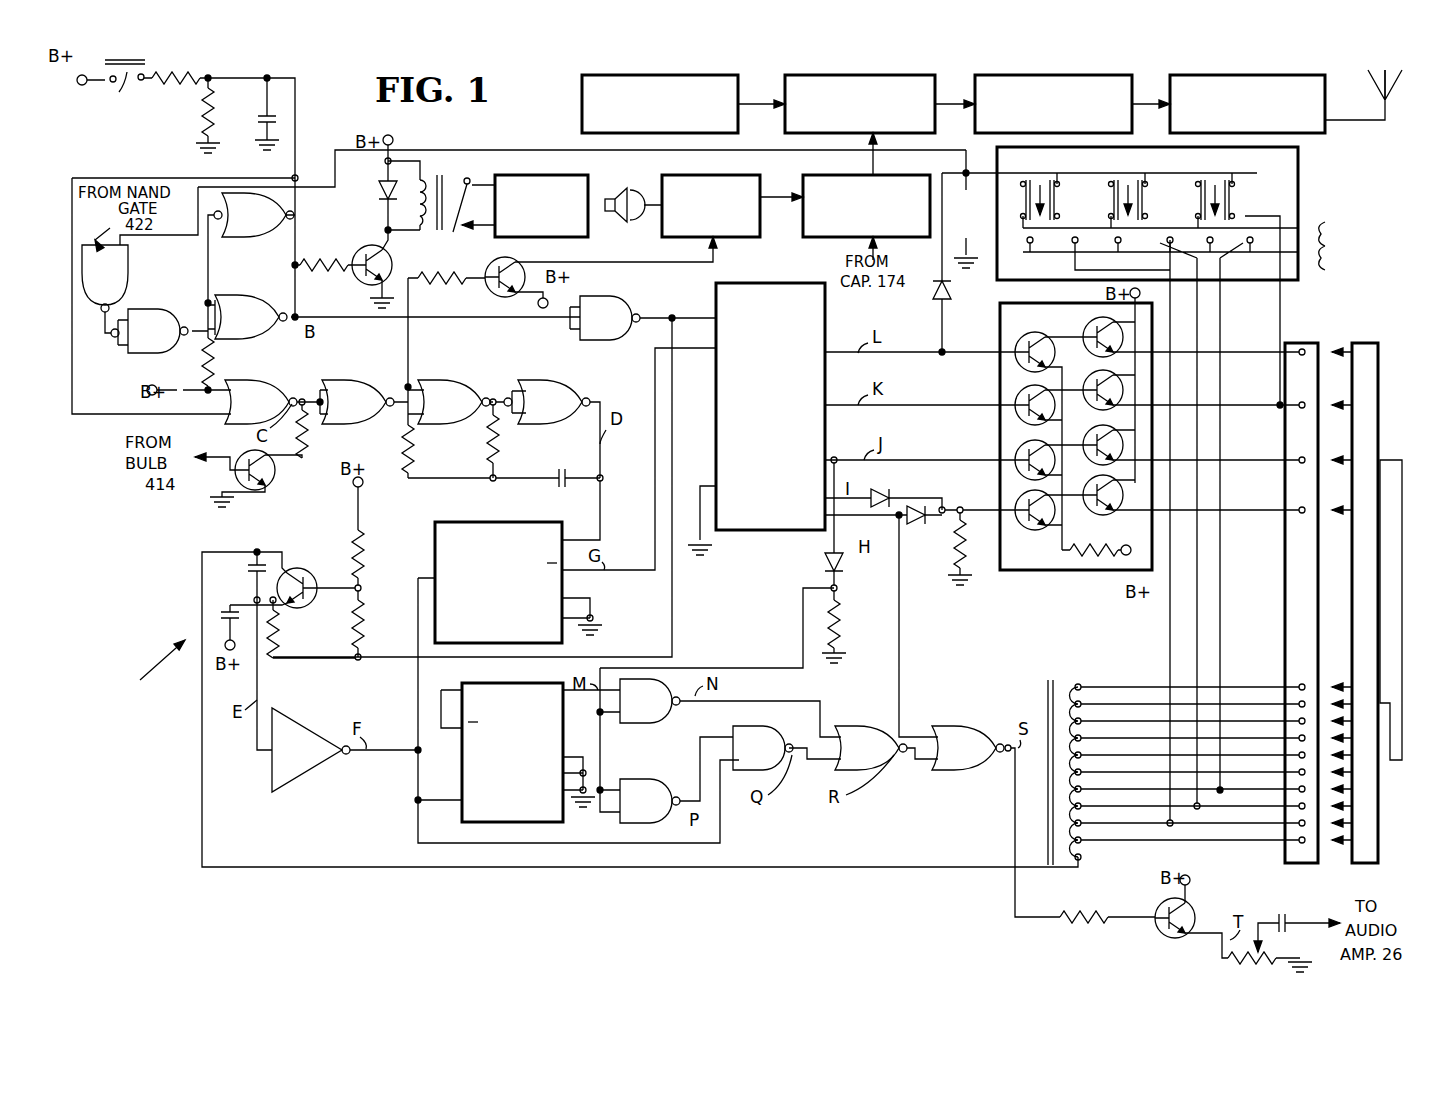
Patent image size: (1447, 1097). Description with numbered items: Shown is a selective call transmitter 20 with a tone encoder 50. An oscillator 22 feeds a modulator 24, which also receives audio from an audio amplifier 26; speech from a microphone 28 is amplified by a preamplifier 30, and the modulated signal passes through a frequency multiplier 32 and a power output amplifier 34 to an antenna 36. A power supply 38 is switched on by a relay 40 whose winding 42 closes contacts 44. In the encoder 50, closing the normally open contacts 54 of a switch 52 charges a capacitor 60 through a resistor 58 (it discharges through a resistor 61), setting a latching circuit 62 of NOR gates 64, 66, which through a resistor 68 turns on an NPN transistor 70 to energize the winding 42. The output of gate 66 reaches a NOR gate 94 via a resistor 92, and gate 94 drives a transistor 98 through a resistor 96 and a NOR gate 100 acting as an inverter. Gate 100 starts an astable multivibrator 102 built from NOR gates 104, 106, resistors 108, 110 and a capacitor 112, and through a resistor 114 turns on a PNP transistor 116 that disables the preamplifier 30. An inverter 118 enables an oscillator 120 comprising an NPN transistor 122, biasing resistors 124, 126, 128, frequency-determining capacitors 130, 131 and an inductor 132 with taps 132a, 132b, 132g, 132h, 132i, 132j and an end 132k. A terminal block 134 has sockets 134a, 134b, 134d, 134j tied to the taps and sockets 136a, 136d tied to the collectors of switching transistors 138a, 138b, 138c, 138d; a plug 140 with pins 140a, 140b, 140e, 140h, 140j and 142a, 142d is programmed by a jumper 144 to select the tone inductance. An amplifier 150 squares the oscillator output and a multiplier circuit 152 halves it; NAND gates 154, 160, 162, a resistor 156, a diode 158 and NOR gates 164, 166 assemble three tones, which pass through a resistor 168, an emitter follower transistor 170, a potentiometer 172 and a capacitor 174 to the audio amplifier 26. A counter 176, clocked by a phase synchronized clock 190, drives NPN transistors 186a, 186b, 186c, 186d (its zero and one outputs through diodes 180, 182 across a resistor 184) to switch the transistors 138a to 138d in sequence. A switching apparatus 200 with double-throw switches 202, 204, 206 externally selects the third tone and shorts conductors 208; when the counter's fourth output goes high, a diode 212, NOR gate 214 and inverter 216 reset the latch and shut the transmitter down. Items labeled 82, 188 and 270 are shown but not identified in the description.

The transmitter 20 is at (626, 70).
The oscillator 22 is at (702, 86).
The modulator 24 is at (850, 86).
The audio amplifier 26 is at (817, 182).
The microphone 28 is at (630, 218).
The preamplifier 30 is at (669, 184).
The frequency multiplier 32 is at (1036, 86).
The power output amplifier 34 is at (1234, 86).
The antenna 36 is at (1370, 81).
The power supply 38 is at (530, 175).
The relay 40 is at (448, 182).
The winding 42 is at (414, 176).
The contacts 44 is at (466, 208).
The encoder 50 is at (121, 688).
The switch 52 is at (162, 72).
The normally open contacts 54 is at (120, 92).
The resistor 58 is at (190, 86).
The capacitor 60 is at (264, 116).
The resistor 61 is at (202, 128).
The latching circuit 62 is at (260, 272).
The NOR gate 64 is at (253, 322).
The NOR gate 66 is at (282, 214).
The resistor 68 is at (335, 266).
The NPN transistor 70 is at (366, 248).
The counter output 82 is at (806, 531).
The resistor 92 is at (212, 366).
The NOR gate 94 is at (263, 390).
The resistor 96 is at (306, 448).
The NPN transistor 98 is at (270, 484).
The NOR gate 100 is at (350, 386).
The astable multivibrator 102 is at (490, 388).
The NOR gate 104 is at (440, 388).
The NOR gate 106 is at (544, 388).
The resistor 108 is at (410, 439).
The resistor 110 is at (495, 437).
The capacitor 112 is at (568, 472).
The resistor 114 is at (432, 278).
The PNP transistor 116 is at (523, 268).
The inverter 118 is at (638, 300).
The oscillator 120 is at (330, 539).
The NPN transistor 122 is at (310, 582).
The biasing resistor 124 is at (276, 620).
The biasing resistor 126 is at (362, 554).
The biasing resistor 128 is at (362, 626).
The frequency determining capacitor 130 is at (250, 574).
The frequency determining capacitor 131 is at (220, 610).
The inductor 132 is at (1073, 684).
The tap 132a is at (1081, 686).
The tap 132b is at (1075, 702).
The tap 132g is at (1073, 791).
The tap 132h is at (1073, 808).
The tap 132i is at (1073, 825).
The tap 132j is at (1073, 842).
The end 132k is at (1081, 857).
The terminal block 134 is at (1289, 491).
The electrical socket 134a is at (1302, 687).
The electrical socket 134b is at (1302, 721).
The electrical socket 134d is at (1249, 651).
The electrical socket 134j is at (1302, 842).
The socket 136a is at (1300, 516).
The socket 136d is at (1287, 344).
The switching transistor 138a is at (1103, 508).
The switching transistor 138b is at (1101, 457).
The switching transistor 138c is at (1101, 402).
The switching transistor 138d is at (1093, 328).
The plug 140 is at (1371, 376).
The pin 140a is at (1350, 686).
The pin 140b is at (1350, 704).
The pin 140e is at (1352, 748).
The pin 140h is at (1352, 800).
The pin 140j is at (1344, 844).
The pin 142a is at (1342, 516).
The pin 142d is at (1332, 352).
The jumper 144 is at (1390, 525).
The amplifier 150 is at (295, 720).
The multiplier circuit 152 is at (470, 822).
The NAND gate 154 is at (660, 720).
The resistor 156 is at (839, 613).
The diode 158 is at (828, 570).
The NAND gate 160 is at (660, 786).
The NAND gate 162 is at (746, 734).
The NOR gate 164 is at (870, 734).
The NOR gate 166 is at (974, 734).
The resistor 168 is at (1080, 924).
The emitter follower transistor 170 is at (1165, 930).
The potentiometer 172 is at (1258, 962).
The capacitor 174 is at (1279, 916).
The counter 176 is at (752, 283).
The diode 180 is at (910, 520).
The diode 182 is at (886, 486).
The resistor 184 is at (957, 548).
The NPN transistor 186a is at (1017, 504).
The NPN transistor 186b is at (1017, 452).
The NPN transistor 186c is at (1017, 397).
The NPN transistor 186d is at (1017, 342).
The resistor 188 is at (1078, 560).
The phase synchronized clock 190 is at (446, 528).
The switching apparatus 200 is at (1298, 182).
The double-throw switch 202 is at (1218, 180).
The double-throw switch 204 is at (1130, 180).
The double-throw switch 206 is at (1042, 180).
The conductors 208 is at (1310, 228).
The diode 212 is at (932, 300).
The NOR gate 214 is at (103, 276).
The inverter 216 is at (150, 362).
The contacts 270 is at (1365, 240).